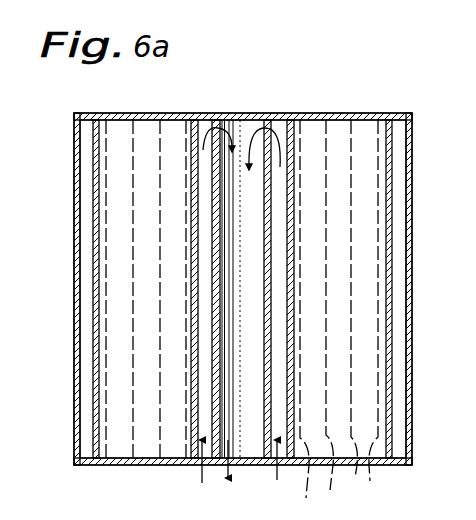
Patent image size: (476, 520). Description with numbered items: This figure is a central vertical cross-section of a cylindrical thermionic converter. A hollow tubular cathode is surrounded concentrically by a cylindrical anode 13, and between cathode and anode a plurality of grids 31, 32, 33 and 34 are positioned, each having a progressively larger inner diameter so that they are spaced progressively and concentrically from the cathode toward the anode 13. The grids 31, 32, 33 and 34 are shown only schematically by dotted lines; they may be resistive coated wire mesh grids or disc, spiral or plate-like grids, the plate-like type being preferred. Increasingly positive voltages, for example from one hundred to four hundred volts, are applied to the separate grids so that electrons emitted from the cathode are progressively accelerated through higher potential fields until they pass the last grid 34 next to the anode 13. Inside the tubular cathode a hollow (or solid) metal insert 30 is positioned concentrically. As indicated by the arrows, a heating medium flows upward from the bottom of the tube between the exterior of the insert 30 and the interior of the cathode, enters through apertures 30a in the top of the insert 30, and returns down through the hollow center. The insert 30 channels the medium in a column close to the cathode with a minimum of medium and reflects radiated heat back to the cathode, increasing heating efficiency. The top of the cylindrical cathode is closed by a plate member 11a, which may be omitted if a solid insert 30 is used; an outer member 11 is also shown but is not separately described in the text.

The housing 11 is at (150, 113).
The plate member 11a is at (284, 113).
The cylindrical anode 13 is at (96, 140).
The metal insert 30 is at (266, 412).
The apertures 30a is at (228, 118).
The grid 31 is at (300, 314).
The grid 32 is at (325, 319).
The grid 33 is at (352, 311).
The grid 34 is at (377, 314).